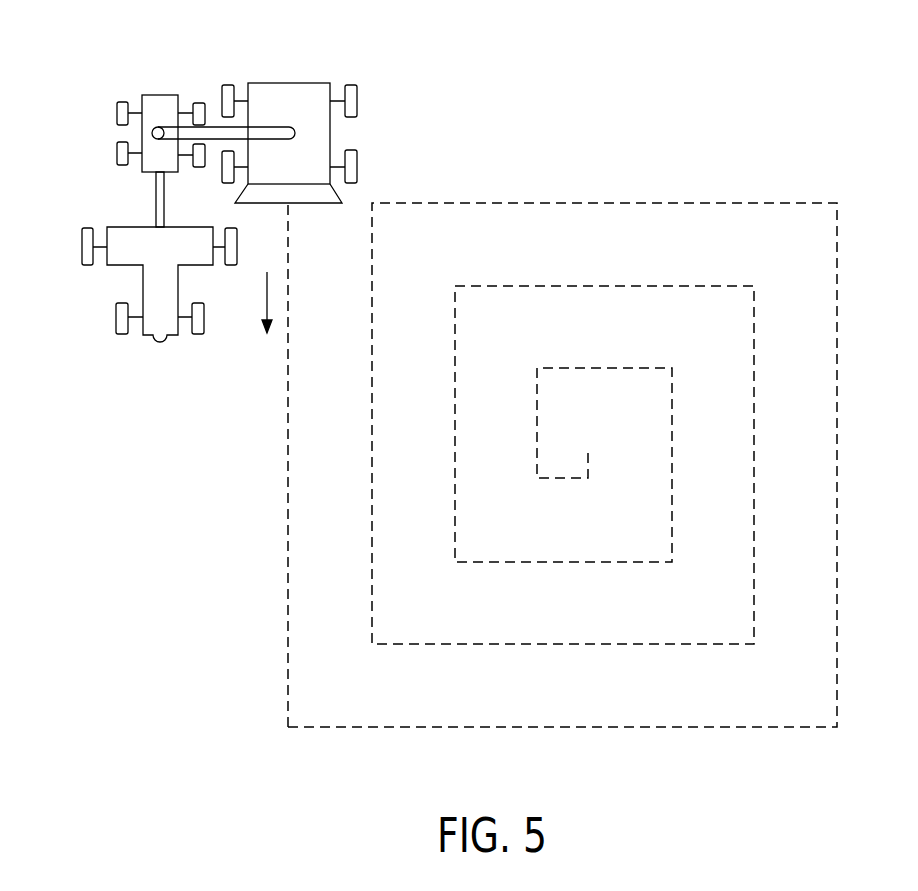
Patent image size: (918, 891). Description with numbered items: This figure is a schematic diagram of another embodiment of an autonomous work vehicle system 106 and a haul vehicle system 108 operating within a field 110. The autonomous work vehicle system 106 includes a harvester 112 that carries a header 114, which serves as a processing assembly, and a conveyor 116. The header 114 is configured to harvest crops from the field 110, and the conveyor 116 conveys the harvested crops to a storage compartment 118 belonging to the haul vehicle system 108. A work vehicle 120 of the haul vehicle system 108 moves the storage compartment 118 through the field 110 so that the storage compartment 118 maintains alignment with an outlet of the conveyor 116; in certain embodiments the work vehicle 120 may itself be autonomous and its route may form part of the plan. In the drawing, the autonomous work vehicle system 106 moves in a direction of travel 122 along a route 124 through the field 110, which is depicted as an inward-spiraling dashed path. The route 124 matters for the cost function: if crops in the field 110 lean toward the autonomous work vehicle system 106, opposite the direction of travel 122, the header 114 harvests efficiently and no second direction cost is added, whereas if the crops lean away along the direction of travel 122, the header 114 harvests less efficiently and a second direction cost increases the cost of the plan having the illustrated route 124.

The autonomous work vehicle system 106 is at (380, 142).
The haul vehicle system 108 is at (90, 187).
The field 110 is at (598, 188).
The harvester 112 is at (282, 108).
The header 114 is at (305, 193).
The conveyor 116 is at (215, 130).
The storage compartment 118 is at (160, 95).
The work vehicle 120 is at (125, 257).
The direction of travel 122 is at (266, 295).
The route 124 is at (286, 472).